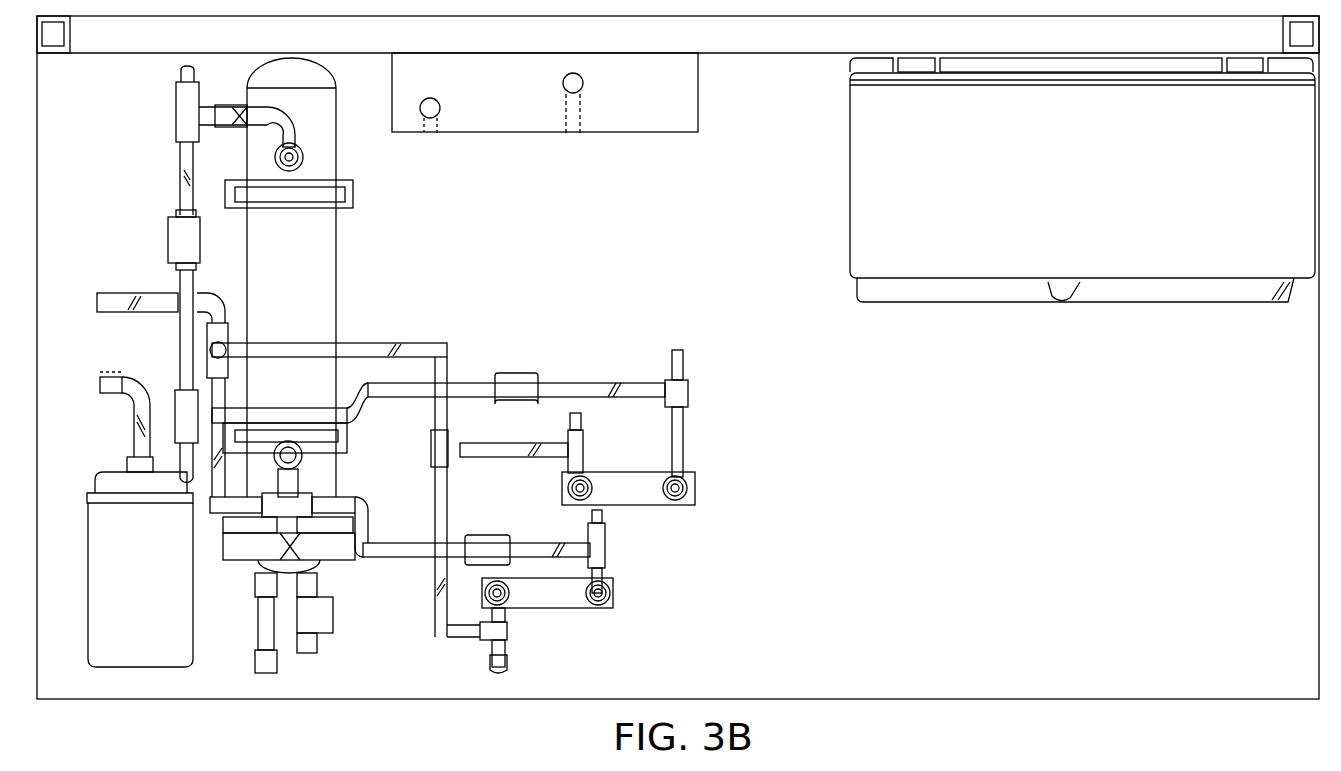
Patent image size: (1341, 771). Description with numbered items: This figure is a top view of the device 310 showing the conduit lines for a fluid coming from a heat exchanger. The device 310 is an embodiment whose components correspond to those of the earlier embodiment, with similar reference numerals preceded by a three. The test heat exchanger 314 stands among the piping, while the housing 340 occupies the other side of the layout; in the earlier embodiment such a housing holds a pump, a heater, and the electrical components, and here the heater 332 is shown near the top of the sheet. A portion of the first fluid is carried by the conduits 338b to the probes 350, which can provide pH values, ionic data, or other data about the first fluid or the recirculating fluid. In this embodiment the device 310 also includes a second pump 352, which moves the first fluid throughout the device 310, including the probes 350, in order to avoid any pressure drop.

The device 310 is at (785, 475).
The test heat exchanger 314 is at (336, 228).
The heater 332 is at (698, 110).
The conduits 338b is at (583, 383).
The housing 340 is at (850, 205).
The probe 350 is at (668, 507).
The second pump 352 is at (90, 568).